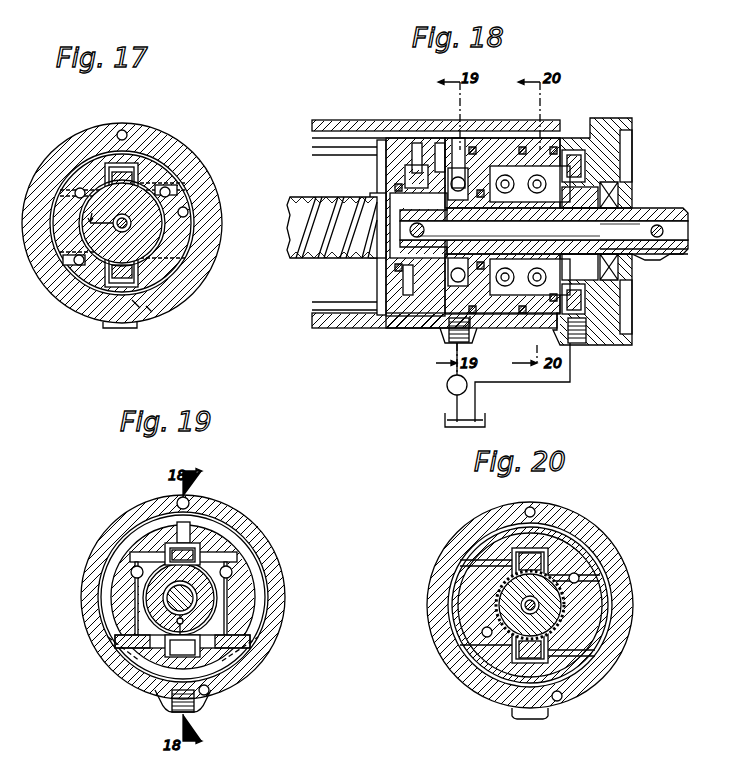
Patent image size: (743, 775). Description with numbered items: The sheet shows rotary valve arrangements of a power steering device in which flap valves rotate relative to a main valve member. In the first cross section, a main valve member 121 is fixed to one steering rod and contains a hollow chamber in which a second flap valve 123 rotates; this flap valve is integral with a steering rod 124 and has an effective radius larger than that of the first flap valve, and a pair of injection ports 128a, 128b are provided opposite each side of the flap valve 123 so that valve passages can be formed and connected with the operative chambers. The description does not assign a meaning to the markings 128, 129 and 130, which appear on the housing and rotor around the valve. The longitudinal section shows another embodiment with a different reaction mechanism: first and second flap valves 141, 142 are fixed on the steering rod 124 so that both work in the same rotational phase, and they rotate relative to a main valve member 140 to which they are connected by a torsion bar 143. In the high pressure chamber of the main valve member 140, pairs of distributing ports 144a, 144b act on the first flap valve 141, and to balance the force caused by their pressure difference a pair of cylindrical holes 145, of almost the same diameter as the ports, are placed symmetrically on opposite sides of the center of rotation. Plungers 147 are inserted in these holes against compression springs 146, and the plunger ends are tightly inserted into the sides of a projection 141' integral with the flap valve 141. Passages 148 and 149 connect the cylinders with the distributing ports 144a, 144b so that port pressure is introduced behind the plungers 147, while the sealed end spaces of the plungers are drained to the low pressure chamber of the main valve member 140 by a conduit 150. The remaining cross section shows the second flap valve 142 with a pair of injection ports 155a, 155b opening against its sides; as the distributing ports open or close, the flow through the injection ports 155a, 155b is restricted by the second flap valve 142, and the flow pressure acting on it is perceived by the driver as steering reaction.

In FIG. 17, the main valve member 121 is at (214, 194).
In FIG. 17, the second flap valve 123 is at (132, 163).
In FIG. 18, the steering rod 124 is at (632, 208).
In FIG. 17, the rotor 128 is at (165, 275).
In FIG. 17, the injection port 128a is at (90, 168).
In FIG. 17, the injection port 128b is at (184, 146).
In FIG. 17, the housing bottom portion 129 is at (142, 312).
In FIG. 17, the bolt hole 130 is at (134, 140).
In FIG. 18, the main valve member 140 is at (492, 138).
In FIG. 19, the main valve member 140 is at (240, 574).
In FIG. 20, the main valve member 140 is at (600, 548).
In FIG. 18, the first flap valve 141 is at (436, 209).
In FIG. 19, the first flap valve 141 is at (183, 618).
In FIG. 18, the projection 141' is at (481, 354).
In FIG. 18, the second flap valve 142 is at (540, 155).
In FIG. 20, the second flap valve 142 is at (575, 533).
In FIG. 18, the torsion bar 143 is at (634, 254).
In FIG. 19, the distributing port 144a is at (222, 534).
In FIG. 19, the distributing port 144b is at (157, 530).
In FIG. 19, the cylindrical hole 145 is at (130, 653).
In FIG. 19, the compression spring 146 is at (130, 641).
In FIG. 19, the plunger 147 is at (118, 682).
In FIG. 19, the passage 148 is at (268, 606).
In FIG. 19, the passage 149 is at (137, 598).
In FIG. 19, the conduit 150 is at (158, 708).
In FIG. 20, the injection port 155a is at (510, 552).
In FIG. 20, the injection port 155b is at (596, 553).